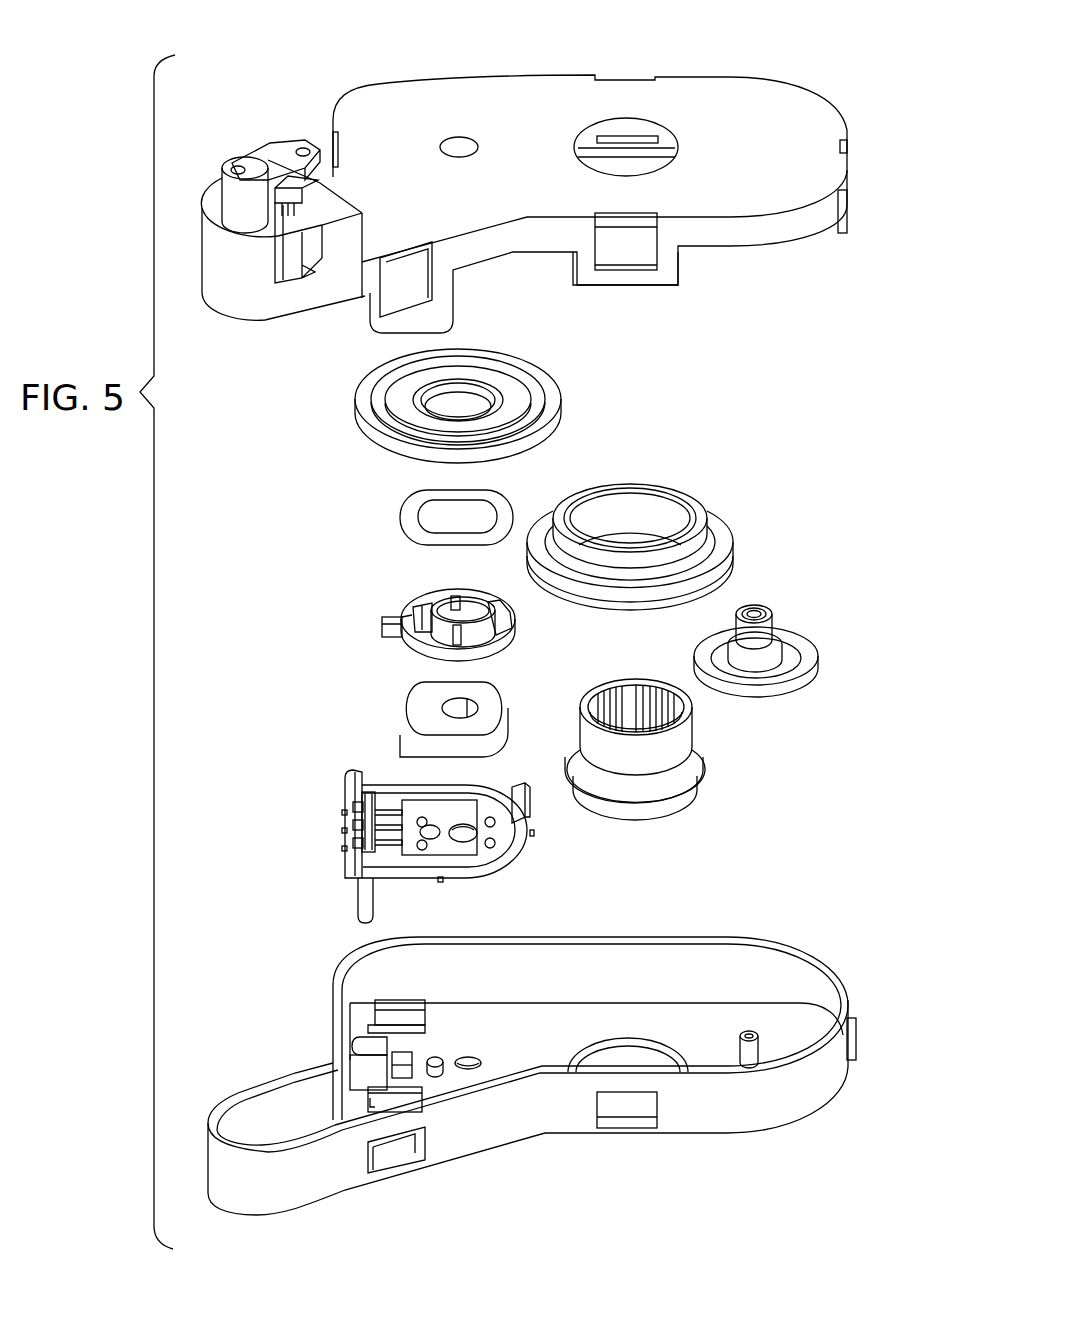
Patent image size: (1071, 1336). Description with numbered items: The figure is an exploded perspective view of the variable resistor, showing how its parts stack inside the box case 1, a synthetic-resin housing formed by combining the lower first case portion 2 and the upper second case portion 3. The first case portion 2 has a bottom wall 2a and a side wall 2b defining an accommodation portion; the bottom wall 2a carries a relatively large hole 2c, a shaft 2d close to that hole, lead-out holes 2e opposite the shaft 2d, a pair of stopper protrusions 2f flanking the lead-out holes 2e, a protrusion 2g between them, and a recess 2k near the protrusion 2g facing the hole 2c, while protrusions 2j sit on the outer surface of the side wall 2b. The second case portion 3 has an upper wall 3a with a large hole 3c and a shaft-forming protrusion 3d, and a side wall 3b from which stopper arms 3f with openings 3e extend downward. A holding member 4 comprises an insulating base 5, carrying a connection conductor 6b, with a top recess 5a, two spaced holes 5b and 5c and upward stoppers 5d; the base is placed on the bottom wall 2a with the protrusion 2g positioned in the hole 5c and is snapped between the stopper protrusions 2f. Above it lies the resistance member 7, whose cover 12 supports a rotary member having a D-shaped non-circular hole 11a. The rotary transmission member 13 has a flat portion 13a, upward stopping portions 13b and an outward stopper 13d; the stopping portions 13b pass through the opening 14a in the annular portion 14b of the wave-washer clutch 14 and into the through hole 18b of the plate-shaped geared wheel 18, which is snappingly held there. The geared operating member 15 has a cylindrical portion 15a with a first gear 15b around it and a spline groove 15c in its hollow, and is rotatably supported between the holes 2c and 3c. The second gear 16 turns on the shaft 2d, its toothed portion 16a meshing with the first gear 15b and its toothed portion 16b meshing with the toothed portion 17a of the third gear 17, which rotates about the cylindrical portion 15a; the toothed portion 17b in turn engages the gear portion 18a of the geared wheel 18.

The box case 1 is at (849, 112).
The first case portion 2 is at (801, 1131).
The bottom wall 2a is at (707, 1020).
The side wall 2b is at (218, 1178).
The hole 2c is at (665, 1068).
The shaft 2d is at (757, 1029).
The lead-out holes 2e is at (358, 1082).
The stopper protrusions 2f is at (380, 1006).
The protrusion 2g is at (437, 1070).
The protrusions 2j is at (853, 1050).
The recess 2k is at (477, 1067).
The second case portion 3 is at (799, 82).
The upper wall 3a is at (727, 88).
The side wall 3b is at (798, 220).
The hole 3c is at (645, 165).
The protrusion 3d is at (457, 137).
The openings 3e is at (635, 257).
The stopper arms 3f is at (595, 283).
The holding member 4 is at (337, 825).
The insulating base 5 is at (522, 871).
The recess 5a is at (482, 806).
The hole 5b is at (464, 841).
The hole 5c is at (433, 838).
The stoppers 5d is at (528, 813).
The connection conductor 6b is at (360, 897).
The resistance member 7 is at (399, 693).
The non-circular hole 11a is at (447, 712).
The cover 12 is at (412, 710).
The rotary transmission member 13 is at (417, 596).
The flat portion 13a is at (507, 617).
The stopping portions 13b is at (472, 598).
The stopper 13d is at (382, 623).
The clutch 14 is at (519, 497).
The opening 14a is at (428, 514).
The annular portion 14b is at (403, 500).
The geared operating member 15 is at (715, 779).
The cylindrical portion 15a is at (700, 729).
The first gear 15b is at (673, 796).
The spline groove 15c is at (615, 690).
The second gear 16 is at (800, 629).
The toothed portion 16a is at (805, 656).
The toothed portion 16b is at (766, 663).
The third gear 17 is at (708, 491).
The toothed portion 17a is at (720, 538).
The toothed portion 17b is at (697, 548).
The geared wheel 18 is at (348, 427).
The gear portion 18a is at (355, 390).
The through hole 18b is at (458, 393).